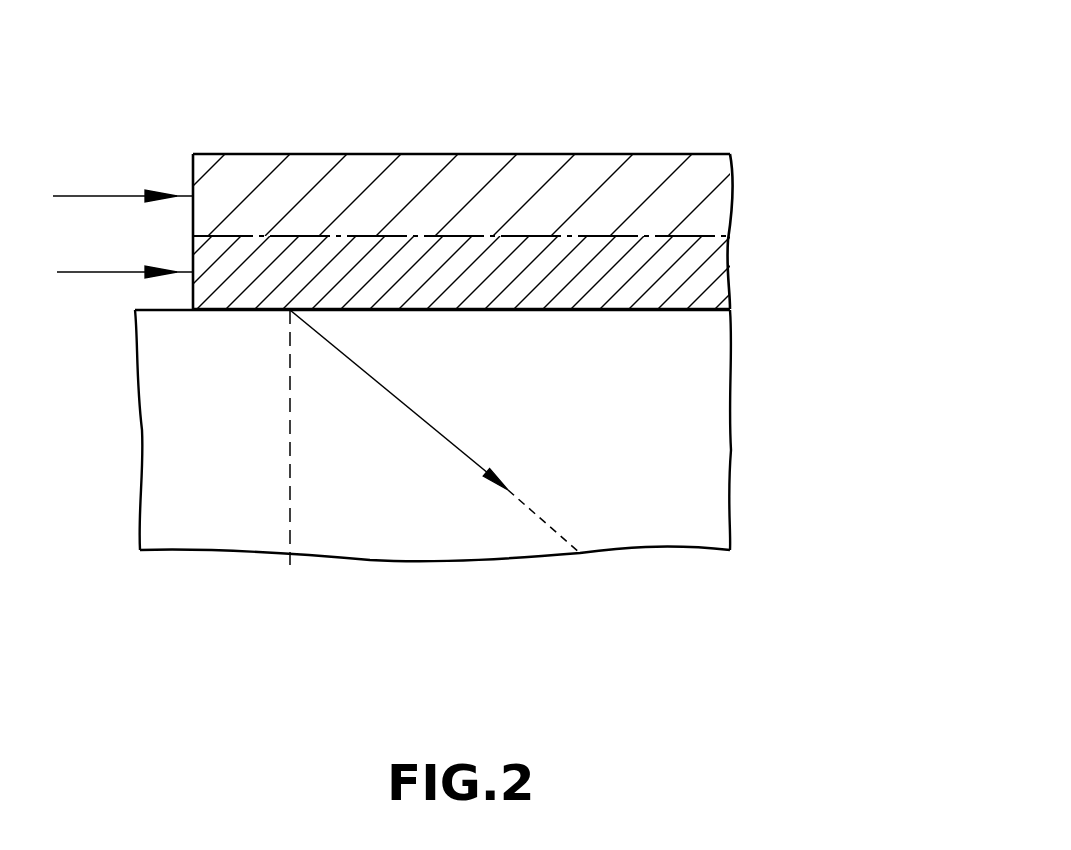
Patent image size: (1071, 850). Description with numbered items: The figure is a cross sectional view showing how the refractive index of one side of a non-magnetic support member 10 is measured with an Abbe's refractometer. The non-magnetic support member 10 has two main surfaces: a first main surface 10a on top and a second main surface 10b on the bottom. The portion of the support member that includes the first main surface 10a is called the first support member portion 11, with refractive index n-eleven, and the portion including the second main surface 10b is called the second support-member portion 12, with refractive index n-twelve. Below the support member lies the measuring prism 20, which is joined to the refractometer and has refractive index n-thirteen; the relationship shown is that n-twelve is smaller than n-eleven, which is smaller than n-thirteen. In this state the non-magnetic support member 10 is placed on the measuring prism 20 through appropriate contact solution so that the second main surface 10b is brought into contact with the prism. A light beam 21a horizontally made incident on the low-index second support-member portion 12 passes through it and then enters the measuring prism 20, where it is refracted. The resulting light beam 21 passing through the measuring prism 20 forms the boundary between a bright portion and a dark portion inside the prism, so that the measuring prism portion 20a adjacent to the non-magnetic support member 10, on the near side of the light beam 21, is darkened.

The non-magnetic support member 10 is at (521, 181).
The first main surface 10a is at (700, 154).
The second main surface 10b is at (683, 311).
The first support member portion 11 is at (713, 205).
The second support-member portion 12 is at (713, 265).
The measuring prism 20 is at (524, 459).
The measuring prism portion adjacent to the support member 20a is at (688, 387).
The light beam 21 is at (462, 448).
The light beam 21a is at (80, 273).